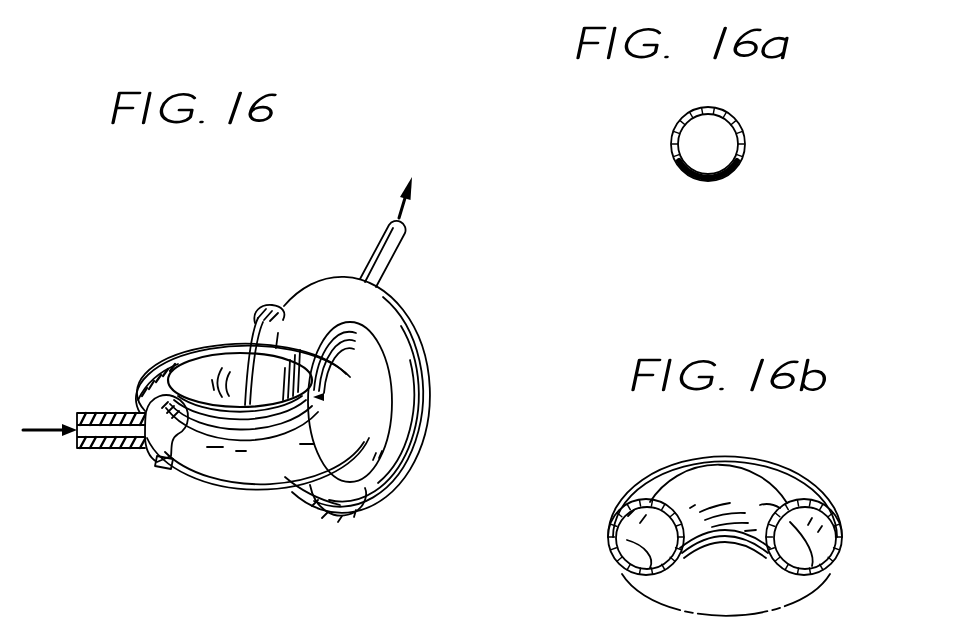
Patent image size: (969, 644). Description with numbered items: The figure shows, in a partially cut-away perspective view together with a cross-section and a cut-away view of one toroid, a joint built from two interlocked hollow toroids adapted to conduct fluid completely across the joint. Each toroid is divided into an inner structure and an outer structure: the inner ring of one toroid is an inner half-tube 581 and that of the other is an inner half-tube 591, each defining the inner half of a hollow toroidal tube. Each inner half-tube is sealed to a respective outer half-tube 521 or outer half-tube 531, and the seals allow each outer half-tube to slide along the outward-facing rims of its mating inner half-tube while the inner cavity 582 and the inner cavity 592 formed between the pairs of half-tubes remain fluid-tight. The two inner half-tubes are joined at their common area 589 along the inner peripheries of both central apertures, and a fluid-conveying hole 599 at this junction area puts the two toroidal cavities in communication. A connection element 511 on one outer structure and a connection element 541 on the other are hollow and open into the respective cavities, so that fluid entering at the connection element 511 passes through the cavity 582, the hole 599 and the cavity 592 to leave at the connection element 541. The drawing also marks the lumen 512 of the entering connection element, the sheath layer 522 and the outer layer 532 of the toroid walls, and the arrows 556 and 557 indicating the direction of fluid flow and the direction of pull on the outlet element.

In FIG. 16, the connection element 511 is at (108, 413).
In FIG. 16, the tube lumen 512 is at (116, 433).
In FIG. 16, the outer half-tube 521 is at (160, 378).
In FIG. 16A, the outer half-tube 521 is at (672, 147).
In FIG. 16B, the outer half-tube 521 is at (640, 495).
In FIG. 16, the outer sheath layer 522 is at (195, 352).
In FIG. 16A, the outer sheath layer 522 is at (709, 106).
In FIG. 16B, the outer sheath layer 522 is at (742, 462).
In FIG. 16, the outer half-tube 531 is at (412, 418).
In FIG. 16, the outer ring layer 532 is at (397, 348).
In FIG. 16, the connection element 541 is at (395, 258).
In FIG. 16, the direction of fluid flow 556 is at (37, 438).
In FIG. 16, the direction of pull 557 is at (405, 207).
In FIG. 16, the inner half-tube 581 is at (210, 480).
In FIG. 16A, the inner half-tube 581 is at (745, 143).
In FIG. 16B, the inner half-tube 581 is at (778, 490).
In FIG. 16, the inner cavity 582 is at (158, 463).
In FIG. 16A, the inner cavity 582 is at (708, 153).
In FIG. 16B, the inner cavity 582 is at (645, 537).
In FIG. 16, the common area 589 is at (320, 397).
In FIG. 16, the inner half-tube 591 is at (307, 497).
In FIG. 16, the inner cavity 592 is at (262, 310).
In FIG. 16, the fluid-conveying hole 599 is at (283, 397).